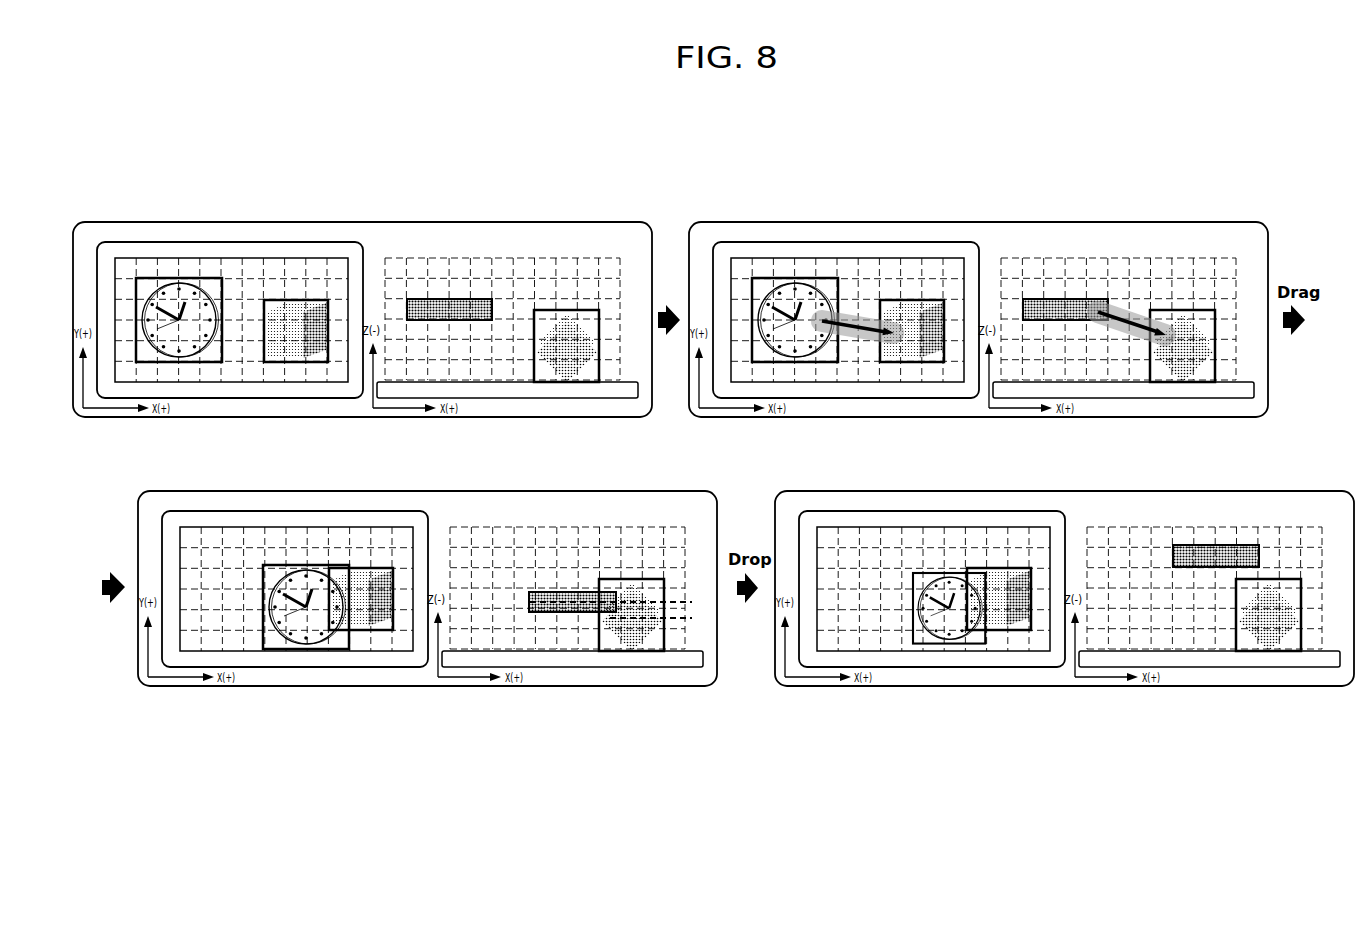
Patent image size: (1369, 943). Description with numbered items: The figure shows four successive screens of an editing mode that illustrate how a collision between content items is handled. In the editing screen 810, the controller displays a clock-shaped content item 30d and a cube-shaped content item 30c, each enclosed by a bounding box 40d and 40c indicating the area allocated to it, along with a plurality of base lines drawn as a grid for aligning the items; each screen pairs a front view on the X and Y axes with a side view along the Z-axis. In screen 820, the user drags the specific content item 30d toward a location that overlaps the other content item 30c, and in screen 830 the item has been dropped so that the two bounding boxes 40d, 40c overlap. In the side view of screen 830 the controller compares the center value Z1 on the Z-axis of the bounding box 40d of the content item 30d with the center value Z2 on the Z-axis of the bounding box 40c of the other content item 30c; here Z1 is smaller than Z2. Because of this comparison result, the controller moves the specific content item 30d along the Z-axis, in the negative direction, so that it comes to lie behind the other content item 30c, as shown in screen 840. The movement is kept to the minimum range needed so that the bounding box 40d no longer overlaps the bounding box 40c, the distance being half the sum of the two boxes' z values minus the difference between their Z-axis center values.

The specific content item 30d is at (192, 262).
The bounding box of the specific content item 40d is at (218, 280).
The other content item 30c is at (308, 276).
The bounding box of the other content item 40c is at (327, 300).
The editing screen 810 is at (362, 289).
The screen 820 is at (1006, 217).
The screen 830 is at (427, 564).
The screen 840 is at (1086, 485).
The center value on the Z-axis of bounding box 40d Z1 is at (623, 603).
The center value on the Z-axis of bounding box 40c Z2 is at (663, 619).